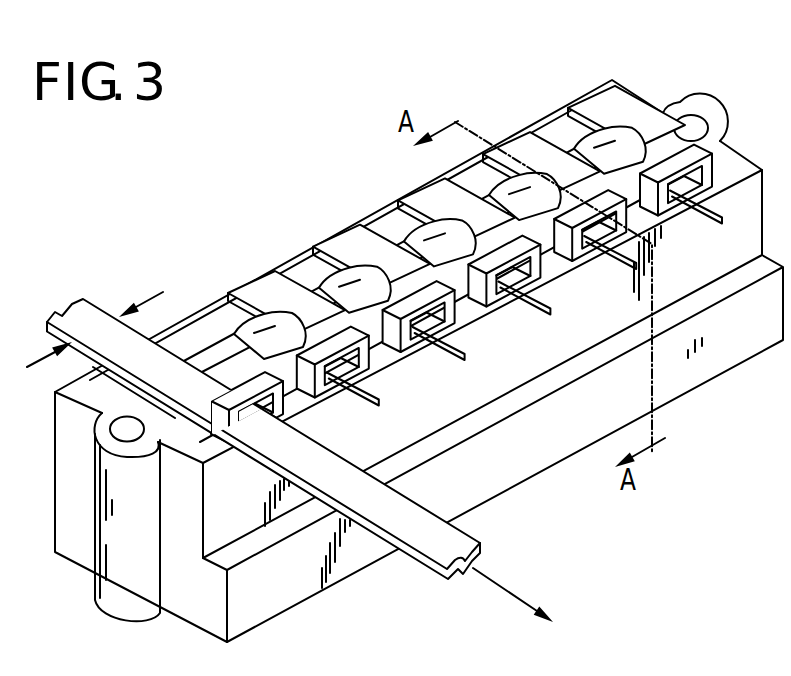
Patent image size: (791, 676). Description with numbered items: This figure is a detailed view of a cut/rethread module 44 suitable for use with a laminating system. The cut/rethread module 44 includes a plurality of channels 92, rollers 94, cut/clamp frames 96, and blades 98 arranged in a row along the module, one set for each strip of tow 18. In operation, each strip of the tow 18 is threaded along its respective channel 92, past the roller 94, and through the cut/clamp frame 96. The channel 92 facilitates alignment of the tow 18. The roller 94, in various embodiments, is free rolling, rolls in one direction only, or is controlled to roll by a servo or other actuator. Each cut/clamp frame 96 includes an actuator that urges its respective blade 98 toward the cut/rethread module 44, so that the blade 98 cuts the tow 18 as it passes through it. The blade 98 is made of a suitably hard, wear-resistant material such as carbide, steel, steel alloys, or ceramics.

The cut/rethread module 44 is at (339, 58).
The channel 92 is at (216, 306).
The roller 94 is at (403, 202).
The cut/clamp frame 96 is at (417, 300).
The blade 98 is at (508, 272).
The tow 18 is at (474, 541).